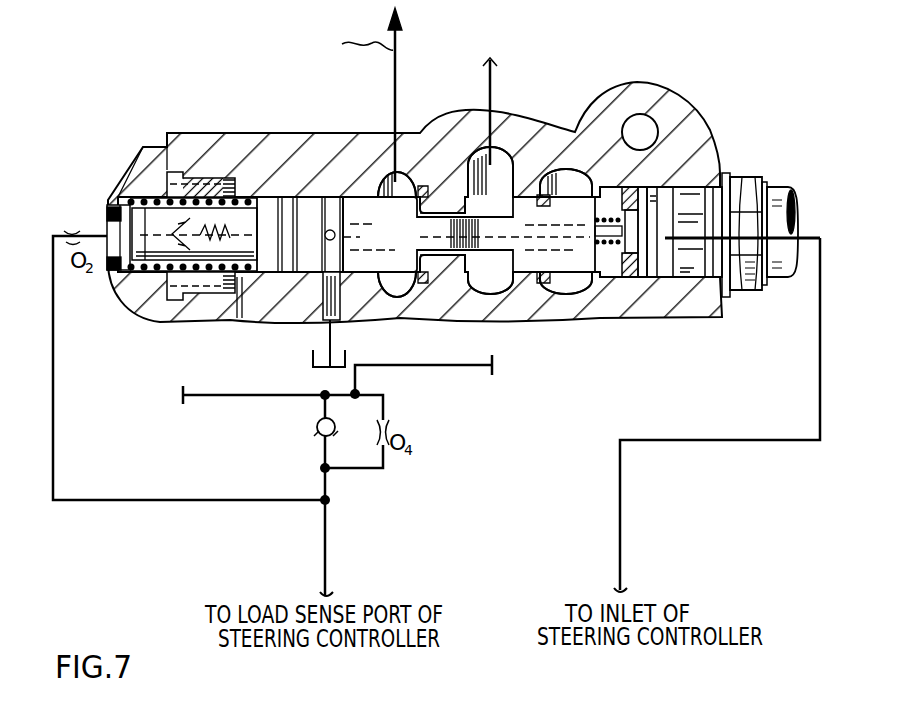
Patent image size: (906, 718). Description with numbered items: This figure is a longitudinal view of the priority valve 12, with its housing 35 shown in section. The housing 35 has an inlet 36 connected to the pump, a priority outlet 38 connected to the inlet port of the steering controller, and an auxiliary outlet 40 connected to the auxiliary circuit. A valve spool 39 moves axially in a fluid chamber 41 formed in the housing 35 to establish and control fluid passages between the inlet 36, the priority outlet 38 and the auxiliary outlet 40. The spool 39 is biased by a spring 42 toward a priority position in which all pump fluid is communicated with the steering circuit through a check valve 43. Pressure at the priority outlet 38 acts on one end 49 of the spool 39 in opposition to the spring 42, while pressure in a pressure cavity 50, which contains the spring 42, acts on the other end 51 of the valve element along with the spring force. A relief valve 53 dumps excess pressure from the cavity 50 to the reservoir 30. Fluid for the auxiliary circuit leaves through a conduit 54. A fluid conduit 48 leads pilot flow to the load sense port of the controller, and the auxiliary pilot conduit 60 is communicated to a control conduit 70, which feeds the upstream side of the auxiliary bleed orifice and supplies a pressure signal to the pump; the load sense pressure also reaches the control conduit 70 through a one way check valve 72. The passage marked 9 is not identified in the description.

The priority valve 12 is at (212, 99).
The housing 35 is at (663, 108).
The relief valve 53 is at (155, 185).
The other end of the priority valve element 51 is at (110, 212).
The spring 42 is at (130, 275).
The pressure cavity 50 is at (148, 272).
The valve spool 39 is at (426, 234).
The auxiliary outlet 40 is at (390, 185).
The conduit 54 is at (393, 88).
The fluid chamber 41 is at (447, 200).
The inlet 36 is at (503, 165).
The check valve 43 is at (637, 262).
The one end of the valve spool 49 is at (683, 187).
The priority outlet 38 is at (742, 233).
The fluid conduit 48 is at (105, 500).
The reservoir 30 is at (313, 362).
The pilot passage 9 is at (301, 319).
The control conduit 70 is at (237, 395).
The auxiliary pilot conduit 60 is at (490, 366).
The one way check valve 72 is at (313, 430).